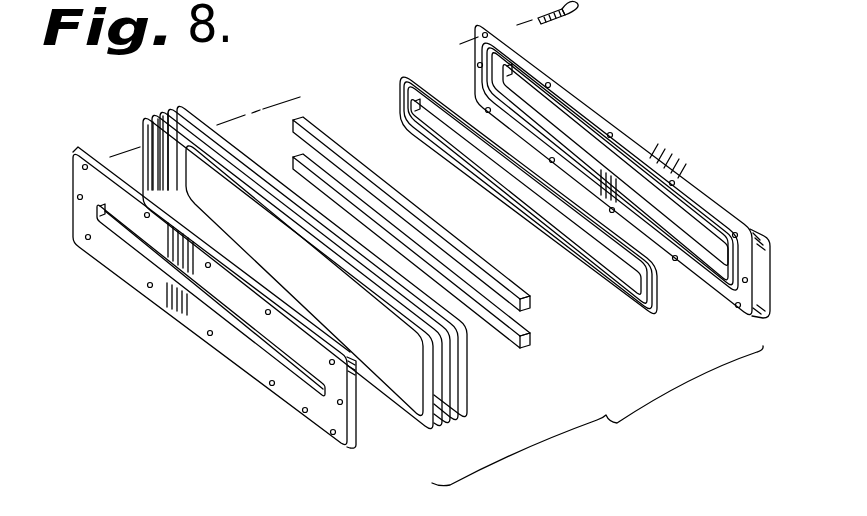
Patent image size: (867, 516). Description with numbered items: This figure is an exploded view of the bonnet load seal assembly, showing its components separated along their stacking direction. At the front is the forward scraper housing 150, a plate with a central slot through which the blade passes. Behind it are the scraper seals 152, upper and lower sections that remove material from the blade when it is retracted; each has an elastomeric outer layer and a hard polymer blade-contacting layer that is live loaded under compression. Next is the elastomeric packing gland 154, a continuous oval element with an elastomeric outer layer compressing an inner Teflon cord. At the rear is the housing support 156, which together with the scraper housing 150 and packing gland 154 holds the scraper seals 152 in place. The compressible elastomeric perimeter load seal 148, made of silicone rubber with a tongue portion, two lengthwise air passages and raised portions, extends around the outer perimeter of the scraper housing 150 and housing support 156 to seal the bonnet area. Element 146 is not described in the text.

The gasket frame 146 is at (423, 365).
The elastomeric perimeter load seal 148 is at (466, 406).
The forward scraper housing 150 is at (318, 428).
The scraper seals 152 is at (532, 310).
The elastomeric packing gland 154 is at (642, 318).
The housing support 156 is at (764, 272).